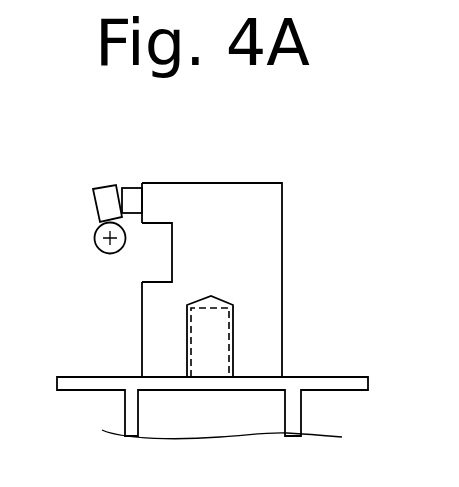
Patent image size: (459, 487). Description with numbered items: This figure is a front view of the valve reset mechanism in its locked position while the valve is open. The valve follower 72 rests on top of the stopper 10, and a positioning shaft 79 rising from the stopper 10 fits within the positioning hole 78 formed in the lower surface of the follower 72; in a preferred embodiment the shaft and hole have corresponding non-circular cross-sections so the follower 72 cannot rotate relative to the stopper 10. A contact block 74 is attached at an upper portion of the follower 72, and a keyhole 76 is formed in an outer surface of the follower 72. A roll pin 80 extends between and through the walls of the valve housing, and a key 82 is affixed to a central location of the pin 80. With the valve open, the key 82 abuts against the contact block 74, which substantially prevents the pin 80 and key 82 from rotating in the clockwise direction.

The stopper 10 is at (342, 389).
The valve follower 72 is at (267, 248).
The contact block 74 is at (130, 187).
The keyhole 76 is at (157, 282).
The positioning hole 78 is at (212, 298).
The positioning shaft 79 is at (218, 360).
The roll pin 80 is at (95, 236).
The key 82 is at (95, 203).